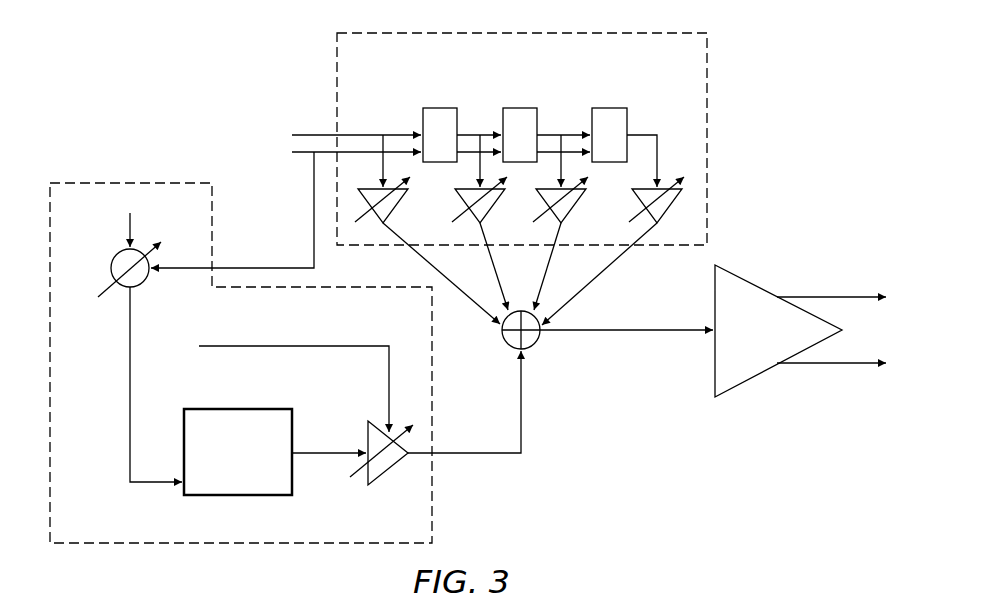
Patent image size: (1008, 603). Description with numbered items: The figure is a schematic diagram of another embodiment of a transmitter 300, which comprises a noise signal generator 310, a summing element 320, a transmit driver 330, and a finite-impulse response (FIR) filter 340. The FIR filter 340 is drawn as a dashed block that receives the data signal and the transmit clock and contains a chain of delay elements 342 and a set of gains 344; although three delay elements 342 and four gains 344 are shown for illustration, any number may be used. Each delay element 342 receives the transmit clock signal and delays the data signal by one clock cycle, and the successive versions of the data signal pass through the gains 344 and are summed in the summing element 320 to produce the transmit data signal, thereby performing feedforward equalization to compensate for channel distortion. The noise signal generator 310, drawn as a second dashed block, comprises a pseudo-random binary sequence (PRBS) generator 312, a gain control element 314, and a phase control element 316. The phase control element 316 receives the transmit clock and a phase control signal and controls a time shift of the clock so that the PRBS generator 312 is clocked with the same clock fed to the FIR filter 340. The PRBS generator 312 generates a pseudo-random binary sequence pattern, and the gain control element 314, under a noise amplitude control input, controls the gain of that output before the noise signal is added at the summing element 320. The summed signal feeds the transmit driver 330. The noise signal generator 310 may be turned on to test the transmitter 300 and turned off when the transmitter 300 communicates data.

The transmitter 300 is at (105, 45).
The noise signal generator 310 is at (432, 497).
The pseudo-random binary sequence (PRBS) generator 312 is at (240, 497).
The gain control element 314 is at (367, 431).
The phase control element 316 is at (141, 288).
The summing element 320 is at (538, 342).
The transmit driver 330 is at (752, 285).
The FIR filter 340 is at (707, 133).
The delay element 342 is at (439, 108).
The gain 344 is at (396, 204).